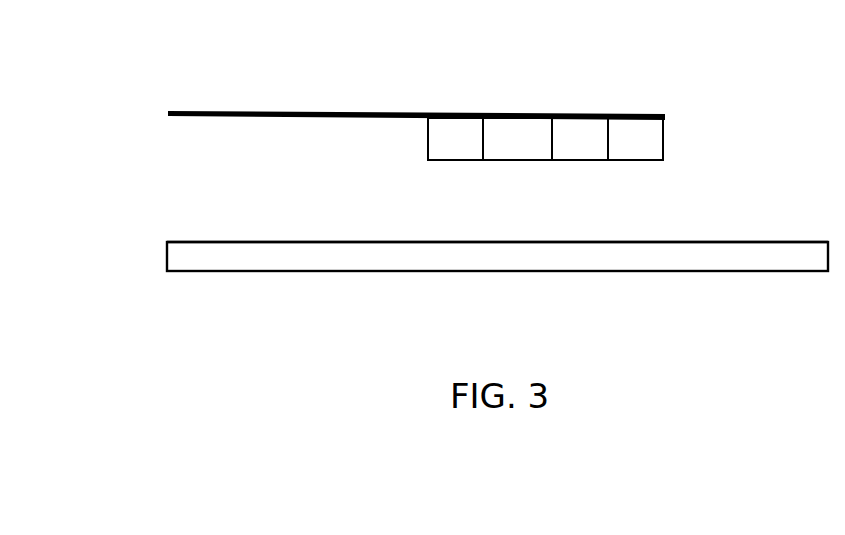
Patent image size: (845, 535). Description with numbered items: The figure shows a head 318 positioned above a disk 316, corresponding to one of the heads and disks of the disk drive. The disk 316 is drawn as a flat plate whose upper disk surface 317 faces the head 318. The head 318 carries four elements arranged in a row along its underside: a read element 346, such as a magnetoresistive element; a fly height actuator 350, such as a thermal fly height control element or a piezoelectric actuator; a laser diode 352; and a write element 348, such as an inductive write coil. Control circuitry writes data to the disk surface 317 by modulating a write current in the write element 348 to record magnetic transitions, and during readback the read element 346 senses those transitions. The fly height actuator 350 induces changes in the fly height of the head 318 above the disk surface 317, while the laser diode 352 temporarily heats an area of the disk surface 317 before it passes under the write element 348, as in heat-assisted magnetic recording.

The disk 316 is at (176, 247).
The disk surface 317 is at (371, 235).
The head 318 is at (690, 117).
The read element 346 is at (437, 116).
The write element 348 is at (629, 116).
The fly height actuator 350 is at (505, 116).
The laser diode 352 is at (574, 116).